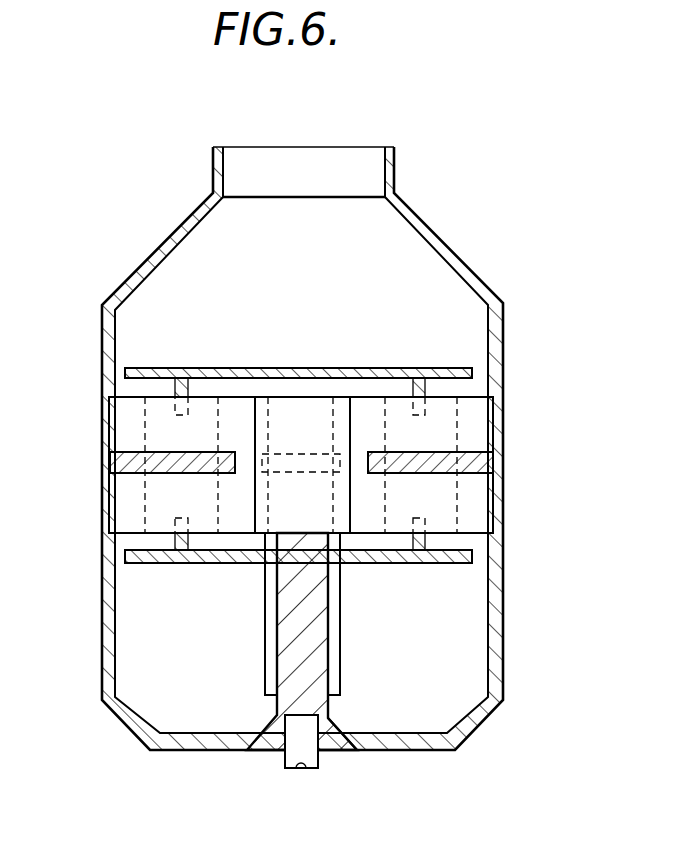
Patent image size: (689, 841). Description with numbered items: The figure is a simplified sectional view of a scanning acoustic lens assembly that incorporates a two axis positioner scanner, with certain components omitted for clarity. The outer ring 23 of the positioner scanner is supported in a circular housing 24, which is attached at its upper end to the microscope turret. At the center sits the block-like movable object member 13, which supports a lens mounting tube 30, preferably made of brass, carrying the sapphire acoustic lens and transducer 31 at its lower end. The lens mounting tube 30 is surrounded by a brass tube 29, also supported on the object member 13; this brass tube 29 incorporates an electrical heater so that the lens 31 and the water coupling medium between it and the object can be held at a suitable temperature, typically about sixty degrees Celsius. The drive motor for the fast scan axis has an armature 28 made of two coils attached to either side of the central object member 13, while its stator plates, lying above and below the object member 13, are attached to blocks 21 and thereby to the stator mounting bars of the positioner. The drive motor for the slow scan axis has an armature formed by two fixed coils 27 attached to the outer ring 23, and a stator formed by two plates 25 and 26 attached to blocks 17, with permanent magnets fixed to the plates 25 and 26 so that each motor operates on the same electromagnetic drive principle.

The central movable object member 13 is at (256, 428).
The blocks 17 is at (150, 500).
The blocks 21 is at (302, 427).
The outer ring 23 is at (490, 425).
The circular housing 24 is at (503, 312).
The stator plate 25 is at (440, 558).
The stator plate 26 is at (160, 371).
The fixed coils 27 is at (125, 457).
The armature 28 is at (268, 471).
The brass tube 29 is at (328, 637).
The lens mounting tube 30 is at (330, 706).
The sapphire acoustic lens and transducer 31 is at (285, 762).